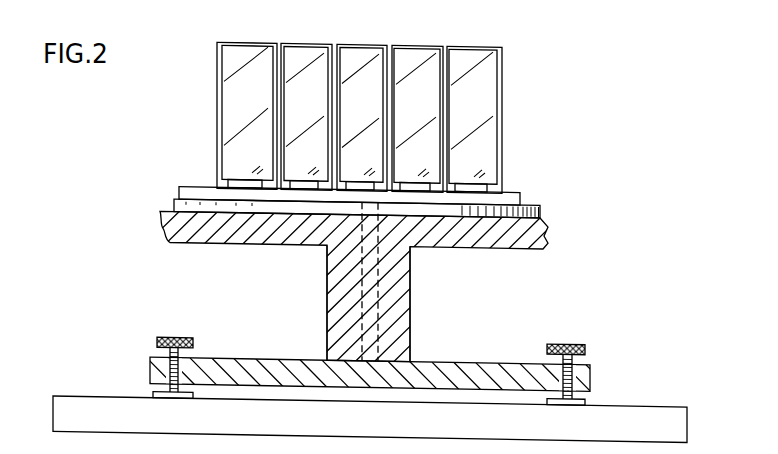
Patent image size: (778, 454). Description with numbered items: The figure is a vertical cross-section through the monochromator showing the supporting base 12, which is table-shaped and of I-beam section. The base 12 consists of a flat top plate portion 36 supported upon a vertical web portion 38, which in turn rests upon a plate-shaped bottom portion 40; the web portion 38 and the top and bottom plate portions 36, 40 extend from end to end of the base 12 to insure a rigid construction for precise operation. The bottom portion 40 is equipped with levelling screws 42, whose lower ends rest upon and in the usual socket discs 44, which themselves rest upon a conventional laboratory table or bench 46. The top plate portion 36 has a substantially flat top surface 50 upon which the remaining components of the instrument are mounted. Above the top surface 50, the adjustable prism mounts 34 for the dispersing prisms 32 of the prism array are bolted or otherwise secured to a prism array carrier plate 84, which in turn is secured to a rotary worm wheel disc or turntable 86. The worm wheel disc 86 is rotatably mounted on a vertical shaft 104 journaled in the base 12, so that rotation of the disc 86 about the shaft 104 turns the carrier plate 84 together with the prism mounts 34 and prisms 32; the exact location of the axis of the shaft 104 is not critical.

The supporting base 12 is at (314, 283).
The dispersing prisms 32 is at (240, 45).
The adjustable prism mounts 34 is at (212, 76).
The top plate portion 36 is at (168, 236).
The vertical web portion 38 is at (328, 292).
The bottom portion 40 is at (592, 361).
The levelling screws 42 is at (157, 344).
The socket discs 44 is at (153, 397).
The laboratory table or bench 46 is at (672, 420).
The flat top surface 50 is at (174, 208).
The prism array carrier plate 84 is at (214, 190).
The worm wheel disc 86 is at (179, 192).
The vertical shaft 104 is at (380, 297).